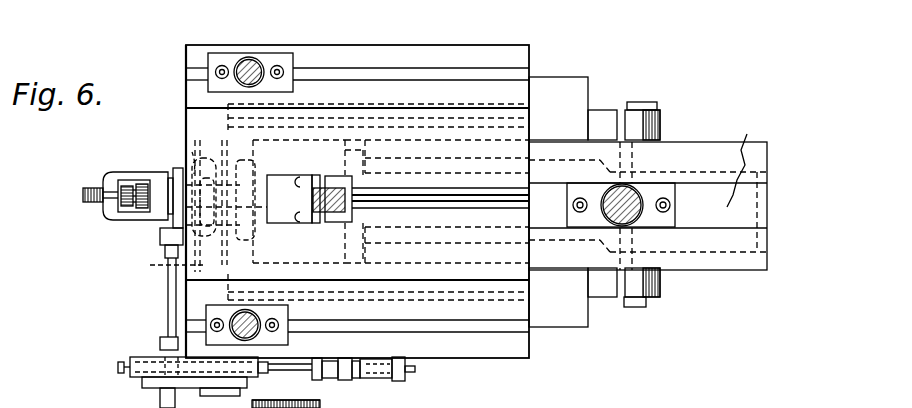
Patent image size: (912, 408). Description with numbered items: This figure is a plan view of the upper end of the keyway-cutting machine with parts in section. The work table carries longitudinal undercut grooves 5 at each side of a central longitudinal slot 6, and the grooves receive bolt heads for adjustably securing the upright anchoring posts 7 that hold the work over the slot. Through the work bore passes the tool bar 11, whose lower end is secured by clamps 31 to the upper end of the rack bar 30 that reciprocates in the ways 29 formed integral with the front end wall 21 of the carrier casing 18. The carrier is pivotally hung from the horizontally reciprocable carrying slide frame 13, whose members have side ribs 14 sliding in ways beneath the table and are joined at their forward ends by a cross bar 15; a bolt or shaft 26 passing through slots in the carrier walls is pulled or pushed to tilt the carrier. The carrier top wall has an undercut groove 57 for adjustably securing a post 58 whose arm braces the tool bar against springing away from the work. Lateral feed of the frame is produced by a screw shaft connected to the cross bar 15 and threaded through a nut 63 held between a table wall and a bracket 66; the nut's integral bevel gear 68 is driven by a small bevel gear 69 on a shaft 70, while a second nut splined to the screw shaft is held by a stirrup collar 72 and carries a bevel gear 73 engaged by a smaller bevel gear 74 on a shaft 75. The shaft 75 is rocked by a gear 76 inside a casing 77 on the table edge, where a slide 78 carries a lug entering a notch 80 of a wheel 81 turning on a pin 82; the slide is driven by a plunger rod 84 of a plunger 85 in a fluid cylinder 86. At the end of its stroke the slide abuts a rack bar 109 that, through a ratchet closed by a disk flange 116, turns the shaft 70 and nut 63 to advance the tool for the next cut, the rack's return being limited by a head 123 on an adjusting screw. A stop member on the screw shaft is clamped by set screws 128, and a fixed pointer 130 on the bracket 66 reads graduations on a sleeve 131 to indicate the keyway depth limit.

The undercut grooves 5 is at (443, 72).
The central longitudinal slot 6 is at (289, 174).
The anchoring posts 7 is at (257, 66).
The tool bar 11 is at (340, 206).
The carrying slide frame 13 is at (604, 110).
The side rib 14 is at (547, 352).
The cross bar 15 is at (252, 184).
The carrier casing 18 is at (700, 142).
The front end wall 21 is at (395, 144).
The bolt or shaft 26 is at (640, 103).
The ways 29 is at (345, 155).
The rack bar 30 is at (328, 222).
The clamps 31 is at (312, 197).
The undercut groove 57 is at (740, 159).
The post 58 is at (640, 226).
The nut 63 is at (173, 170).
The bracket 66 is at (120, 172).
The bevel gear 68 is at (195, 158).
The small bevel gear 69 is at (152, 236).
The shaft 70 is at (168, 316).
The stirrup collar 72 is at (208, 168).
The bevel gear 73 is at (212, 192).
The smaller bevel gear 74 is at (233, 227).
The shaft 75 is at (311, 333).
The gear 76 is at (189, 404).
The casing 77 is at (136, 357).
The slide 78 is at (258, 353).
The notch 80 is at (554, 404).
The wheel 81 is at (86, 189).
The pin 82 is at (242, 392).
The plunger rod 84 is at (312, 373).
The plunger 85 is at (358, 378).
The cylinder 86 is at (380, 380).
The rack bar 109 is at (136, 380).
The disk flange 116 is at (160, 394).
The head 123 is at (118, 368).
The set screws 128 is at (144, 210).
The fixed pointer 130 is at (128, 204).
The sleeve 131 is at (138, 208).